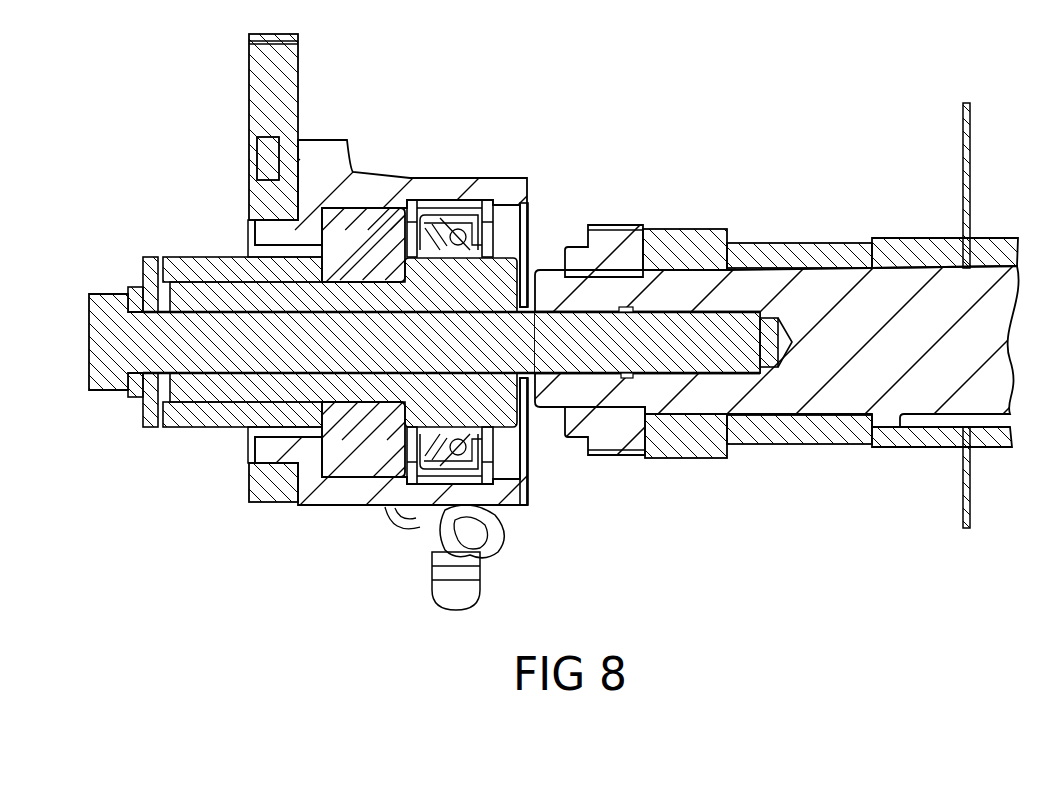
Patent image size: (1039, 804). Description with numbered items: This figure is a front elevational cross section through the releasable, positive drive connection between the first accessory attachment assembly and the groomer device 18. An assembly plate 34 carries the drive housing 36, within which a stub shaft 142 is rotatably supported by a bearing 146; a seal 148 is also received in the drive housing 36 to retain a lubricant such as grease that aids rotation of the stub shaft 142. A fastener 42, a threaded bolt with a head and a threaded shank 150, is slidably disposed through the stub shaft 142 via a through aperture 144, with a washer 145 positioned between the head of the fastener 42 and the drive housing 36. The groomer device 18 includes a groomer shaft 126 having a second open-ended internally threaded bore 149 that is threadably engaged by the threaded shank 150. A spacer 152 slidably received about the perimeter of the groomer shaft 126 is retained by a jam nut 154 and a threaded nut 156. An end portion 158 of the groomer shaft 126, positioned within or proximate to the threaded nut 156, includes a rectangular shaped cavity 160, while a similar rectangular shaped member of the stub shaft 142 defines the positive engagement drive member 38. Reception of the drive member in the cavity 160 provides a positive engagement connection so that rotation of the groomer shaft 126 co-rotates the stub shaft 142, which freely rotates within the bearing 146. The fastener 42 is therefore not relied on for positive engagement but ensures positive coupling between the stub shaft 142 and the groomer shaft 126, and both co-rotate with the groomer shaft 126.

The groomer device 18 is at (940, 490).
The assembly plate 34 is at (268, 492).
The drive housing 36 is at (358, 498).
The positive engagement drive member 38 is at (548, 378).
The fastener 42 is at (113, 383).
The groomer shaft 126 is at (930, 398).
The stub shaft 142 is at (247, 395).
The through aperture 144 is at (215, 373).
The washer 145 is at (135, 297).
The bearing 146 is at (345, 468).
The seal 148 is at (458, 455).
The second open-ended internally threaded bore 149 is at (768, 357).
The threaded shank 150 is at (736, 327).
The spacer 152 is at (790, 253).
The jam nut 154 is at (702, 442).
The threaded nut 156 is at (615, 437).
The end portion 158 is at (574, 395).
The rectangular shaped cavity 160 is at (548, 305).